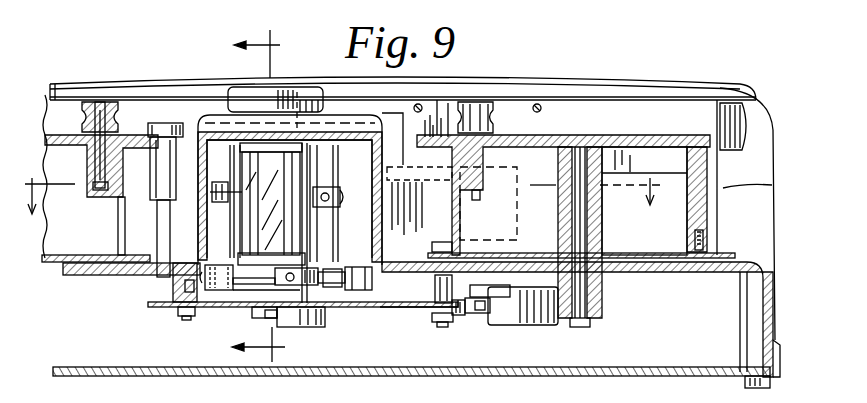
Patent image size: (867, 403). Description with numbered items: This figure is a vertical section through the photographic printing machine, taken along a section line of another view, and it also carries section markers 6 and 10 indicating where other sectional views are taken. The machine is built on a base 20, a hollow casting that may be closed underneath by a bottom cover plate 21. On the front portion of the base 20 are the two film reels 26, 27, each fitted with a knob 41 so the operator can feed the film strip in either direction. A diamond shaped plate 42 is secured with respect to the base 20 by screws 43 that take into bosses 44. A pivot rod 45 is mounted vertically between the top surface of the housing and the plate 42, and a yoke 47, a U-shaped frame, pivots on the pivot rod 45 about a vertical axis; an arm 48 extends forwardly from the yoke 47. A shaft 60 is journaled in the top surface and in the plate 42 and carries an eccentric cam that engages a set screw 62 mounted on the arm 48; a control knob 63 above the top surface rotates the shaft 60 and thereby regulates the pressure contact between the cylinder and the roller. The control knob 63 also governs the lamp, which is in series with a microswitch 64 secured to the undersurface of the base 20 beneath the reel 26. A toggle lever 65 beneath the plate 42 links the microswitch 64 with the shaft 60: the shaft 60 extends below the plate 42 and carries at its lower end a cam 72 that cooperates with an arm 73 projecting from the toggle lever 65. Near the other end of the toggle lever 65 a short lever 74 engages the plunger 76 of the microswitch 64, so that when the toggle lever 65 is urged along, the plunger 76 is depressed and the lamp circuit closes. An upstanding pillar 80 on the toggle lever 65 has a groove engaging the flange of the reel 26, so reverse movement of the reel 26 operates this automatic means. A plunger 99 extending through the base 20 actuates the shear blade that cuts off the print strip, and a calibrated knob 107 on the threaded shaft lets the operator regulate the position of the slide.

The section line 6- 6 is at (342, 216).
The section line 10- 10 is at (240, 197).
The base 20 is at (695, 273).
The bottom cover plate 21 is at (672, 362).
The reel 26 is at (712, 210).
The reel 27 is at (118, 220).
The knob 41 is at (100, 102).
The diamond shaped plate 42 is at (165, 305).
The screw 43 is at (183, 318).
The boss 44 is at (173, 299).
The pivot rod 45 is at (326, 160).
The yoke 47 is at (336, 207).
The arm 48 is at (340, 269).
The shaft 60 is at (310, 170).
The set screw 62 is at (372, 280).
The control knob 63 is at (262, 109).
The microswitch 64 is at (542, 327).
The toggle lever 65 is at (415, 310).
The cam 72 is at (318, 327).
The arm 73 is at (255, 316).
The short lever 74 is at (460, 318).
The plunger 76 is at (482, 316).
The pillar 80 is at (440, 278).
The plunger 99 is at (160, 238).
The calibrated knob 107 is at (746, 118).